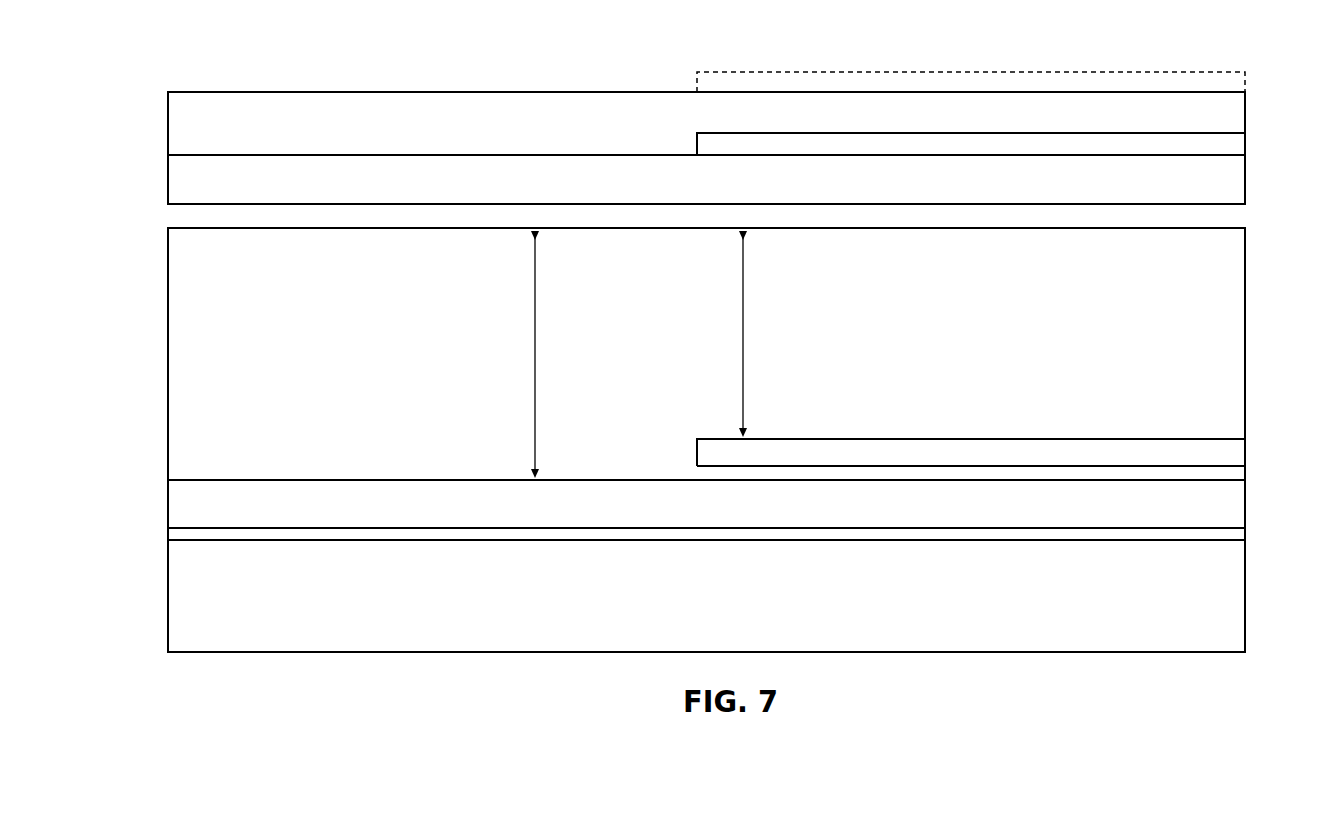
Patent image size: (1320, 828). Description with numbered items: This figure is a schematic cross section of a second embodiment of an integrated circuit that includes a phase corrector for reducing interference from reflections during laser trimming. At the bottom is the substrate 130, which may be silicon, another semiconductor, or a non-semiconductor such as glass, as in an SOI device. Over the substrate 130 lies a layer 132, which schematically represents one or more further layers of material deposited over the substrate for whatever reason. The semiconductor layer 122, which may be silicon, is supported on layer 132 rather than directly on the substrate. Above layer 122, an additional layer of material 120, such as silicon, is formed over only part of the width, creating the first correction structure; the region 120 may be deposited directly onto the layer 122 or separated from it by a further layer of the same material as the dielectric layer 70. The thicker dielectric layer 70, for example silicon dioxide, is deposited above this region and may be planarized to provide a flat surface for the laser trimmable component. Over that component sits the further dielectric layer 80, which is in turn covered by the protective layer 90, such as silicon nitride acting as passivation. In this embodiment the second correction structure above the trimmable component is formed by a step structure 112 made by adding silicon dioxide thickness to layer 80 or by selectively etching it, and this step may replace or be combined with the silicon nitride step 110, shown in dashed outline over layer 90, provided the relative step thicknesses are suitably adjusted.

The protective layer 90 is at (180, 133).
The additional step 110 is at (1018, 82).
The step structure 112 is at (1228, 145).
The dielectric layer 80 is at (1228, 183).
The dielectric layer 70 is at (180, 358).
The additional layer of material 120 is at (1228, 457).
The semiconductor layer 122 is at (180, 508).
The further layers of material 132 is at (1228, 535).
The substrate 130 is at (1228, 597).